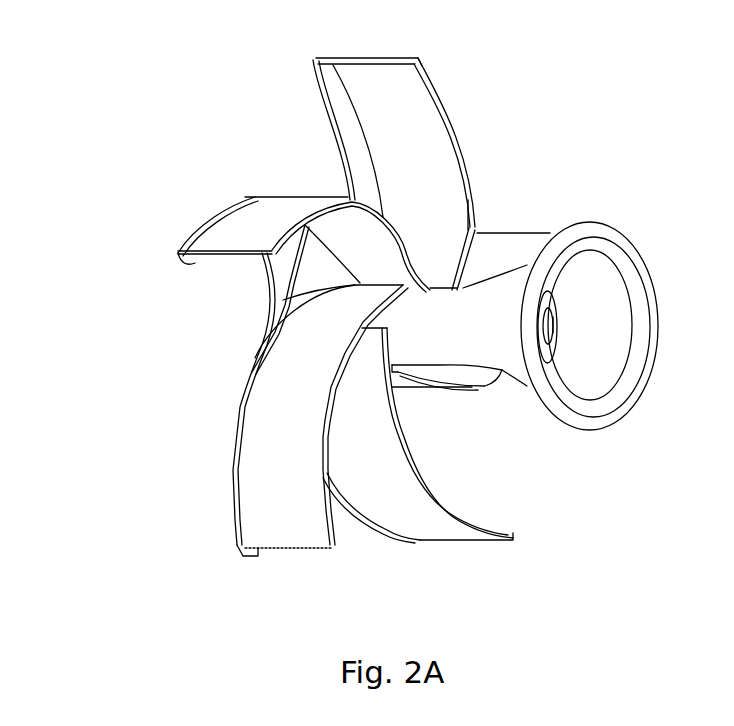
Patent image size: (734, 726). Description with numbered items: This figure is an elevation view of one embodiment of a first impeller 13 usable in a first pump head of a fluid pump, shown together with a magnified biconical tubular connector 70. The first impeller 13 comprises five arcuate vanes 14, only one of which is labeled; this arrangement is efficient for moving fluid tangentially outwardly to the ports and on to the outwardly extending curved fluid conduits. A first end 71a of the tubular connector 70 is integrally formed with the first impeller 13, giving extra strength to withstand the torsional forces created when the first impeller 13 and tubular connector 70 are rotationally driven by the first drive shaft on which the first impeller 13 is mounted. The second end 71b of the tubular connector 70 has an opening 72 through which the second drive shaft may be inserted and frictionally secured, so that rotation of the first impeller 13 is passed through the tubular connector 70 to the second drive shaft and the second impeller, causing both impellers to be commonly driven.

The first impeller 13 is at (213, 134).
The arcuate vanes 14 is at (288, 537).
The biconical tubular connector 70 is at (438, 345).
The first end 71a is at (325, 277).
The second end 71b is at (608, 234).
The opening 72 is at (567, 324).